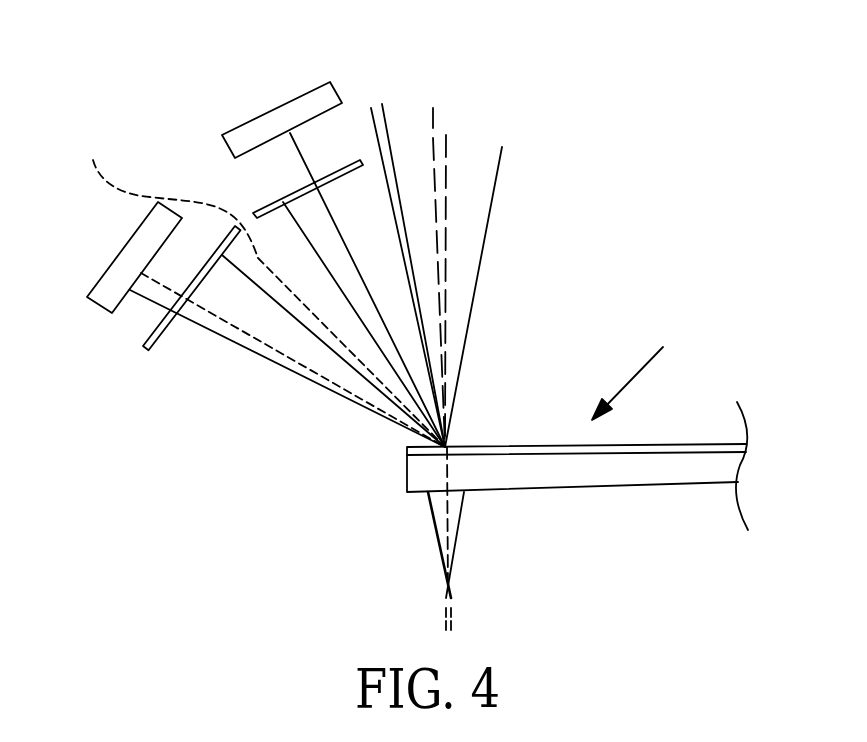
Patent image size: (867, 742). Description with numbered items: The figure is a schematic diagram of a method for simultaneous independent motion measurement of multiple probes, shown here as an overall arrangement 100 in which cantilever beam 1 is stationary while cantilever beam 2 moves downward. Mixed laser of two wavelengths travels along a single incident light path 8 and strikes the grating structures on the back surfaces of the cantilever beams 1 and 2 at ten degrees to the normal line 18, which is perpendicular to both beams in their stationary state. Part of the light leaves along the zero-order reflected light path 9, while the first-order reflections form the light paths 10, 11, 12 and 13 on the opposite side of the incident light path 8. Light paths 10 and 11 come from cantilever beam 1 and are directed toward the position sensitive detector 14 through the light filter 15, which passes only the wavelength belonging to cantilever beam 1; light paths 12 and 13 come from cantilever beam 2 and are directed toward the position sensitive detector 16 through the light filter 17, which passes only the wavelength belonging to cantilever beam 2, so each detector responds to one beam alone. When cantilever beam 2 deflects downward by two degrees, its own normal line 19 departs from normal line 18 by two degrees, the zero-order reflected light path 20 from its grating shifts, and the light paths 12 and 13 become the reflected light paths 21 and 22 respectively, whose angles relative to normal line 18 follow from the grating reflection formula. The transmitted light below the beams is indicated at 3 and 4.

The measurement arrangement 100 is at (648, 364).
The cantilever beam 1 is at (460, 448).
The cantilever beam 2 is at (597, 468).
The transmitted beam focus 3 is at (442, 567).
The transmitted beam 4 is at (453, 507).
The incident light path 8 is at (492, 208).
The zero-order reflected light path 9 is at (386, 123).
The first-order reflected laser light path 10 is at (303, 150).
The first-order reflected light path 11 is at (315, 243).
The first-order reflected light path 12 is at (255, 283).
The first-order reflected laser light path 13 is at (237, 327).
The position sensitive detector 14 is at (315, 100).
The light filter 15 is at (278, 200).
The position sensitive detector 16 is at (157, 230).
The light filter 17 is at (155, 323).
The normal line 18 is at (447, 154).
The normal line 19 is at (436, 123).
The zero-order reflected light path 20 is at (371, 108).
The reflected light path 21 is at (350, 362).
The reflected light path 22 is at (280, 363).